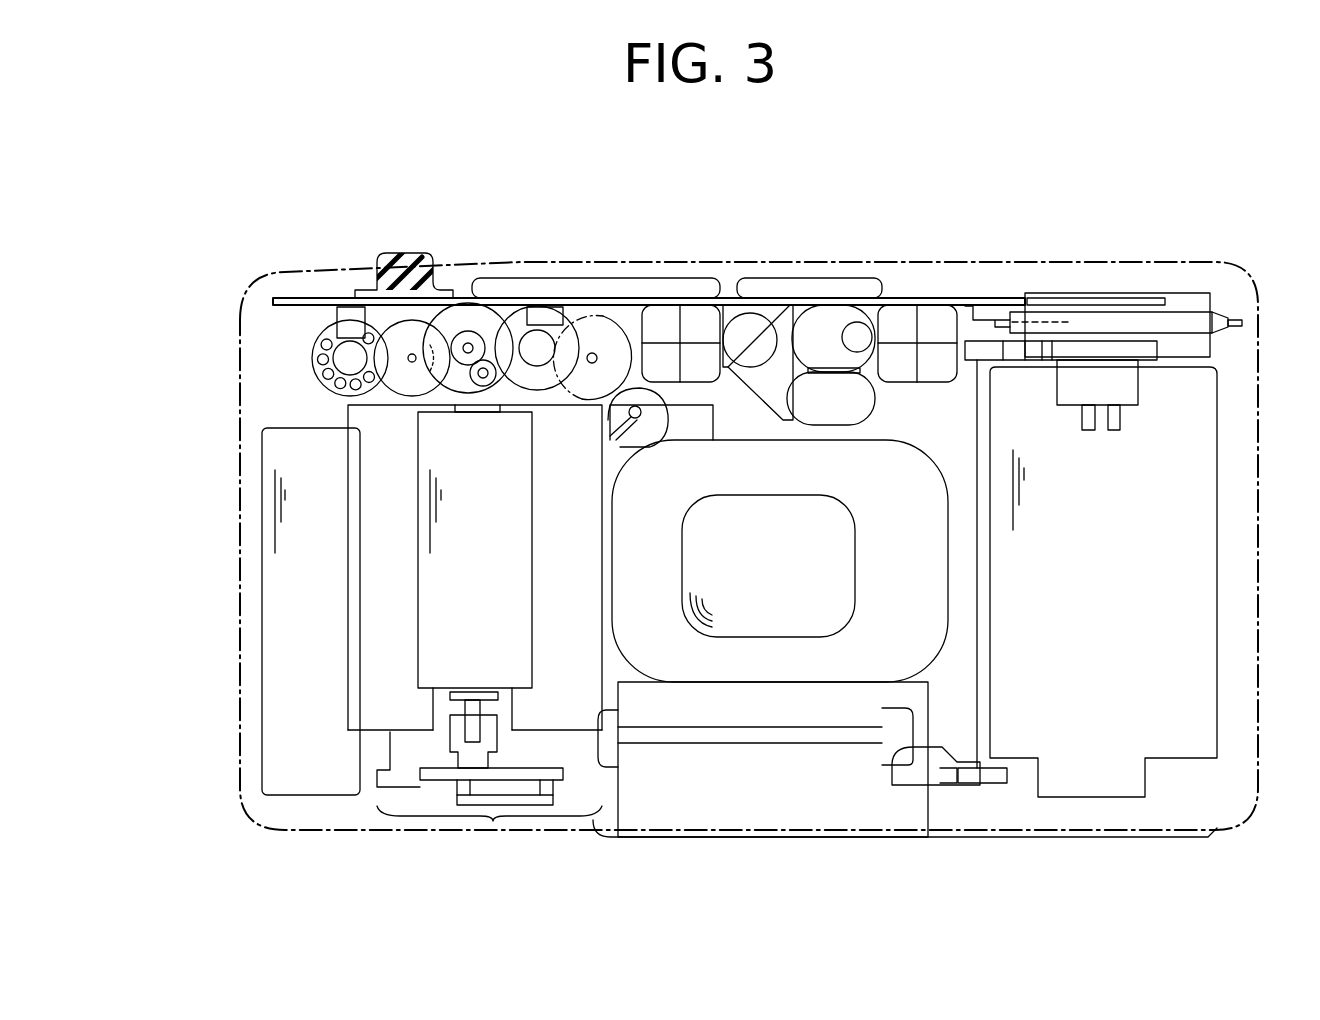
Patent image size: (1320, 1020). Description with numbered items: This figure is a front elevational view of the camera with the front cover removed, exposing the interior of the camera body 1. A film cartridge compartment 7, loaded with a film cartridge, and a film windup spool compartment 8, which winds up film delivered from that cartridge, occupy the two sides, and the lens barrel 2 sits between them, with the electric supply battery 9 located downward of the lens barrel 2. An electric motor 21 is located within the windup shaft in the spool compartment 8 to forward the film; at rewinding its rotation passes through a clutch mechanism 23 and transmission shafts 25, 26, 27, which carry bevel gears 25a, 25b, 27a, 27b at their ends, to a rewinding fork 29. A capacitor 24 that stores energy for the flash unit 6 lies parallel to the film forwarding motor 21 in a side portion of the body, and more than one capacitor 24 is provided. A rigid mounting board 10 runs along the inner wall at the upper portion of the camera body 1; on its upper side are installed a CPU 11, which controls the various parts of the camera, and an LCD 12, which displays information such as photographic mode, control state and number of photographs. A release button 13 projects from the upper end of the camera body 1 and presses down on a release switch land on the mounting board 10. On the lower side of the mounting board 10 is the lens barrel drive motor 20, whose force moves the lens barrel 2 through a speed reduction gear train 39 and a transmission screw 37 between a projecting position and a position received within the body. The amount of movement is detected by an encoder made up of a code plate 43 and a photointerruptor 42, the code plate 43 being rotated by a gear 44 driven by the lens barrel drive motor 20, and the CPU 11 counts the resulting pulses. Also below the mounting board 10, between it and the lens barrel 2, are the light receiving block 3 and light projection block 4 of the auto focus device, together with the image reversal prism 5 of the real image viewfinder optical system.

The camera body 1 is at (248, 332).
The lens barrel 2 is at (848, 665).
The light receiving block 3 is at (660, 330).
The light projection block 4 is at (900, 320).
The image reversal prism 5 is at (785, 315).
The flash unit 6 is at (1190, 298).
The film cartridge compartment 7 is at (1195, 712).
The film windup spool compartment 8 is at (360, 410).
The electric supply battery 9 is at (700, 820).
The mounting board 10 is at (305, 298).
The CPU 11 is at (820, 283).
The LCD 12 is at (620, 282).
The release button 13 is at (413, 253).
The lens barrel drive motor 20 is at (465, 320).
The electric motor 21 is at (435, 676).
The clutch mechanism 23 is at (492, 822).
The capacitor 24 is at (275, 757).
The transmission shaft 25 is at (782, 740).
The bevel gear 25a is at (615, 722).
The bevel gear 25b is at (890, 720).
The transmission shaft 26 is at (937, 786).
The transmission shaft 27 is at (983, 686).
The bevel gear 27a is at (980, 784).
The bevel gear 27b is at (975, 345).
The rewinding fork 29 is at (1086, 430).
The transmission screw 37 is at (605, 435).
The speed reduction gear train 39 is at (520, 395).
The photointerruptor 42 is at (348, 305).
The code plate 43 is at (320, 355).
The gear 44 is at (408, 376).